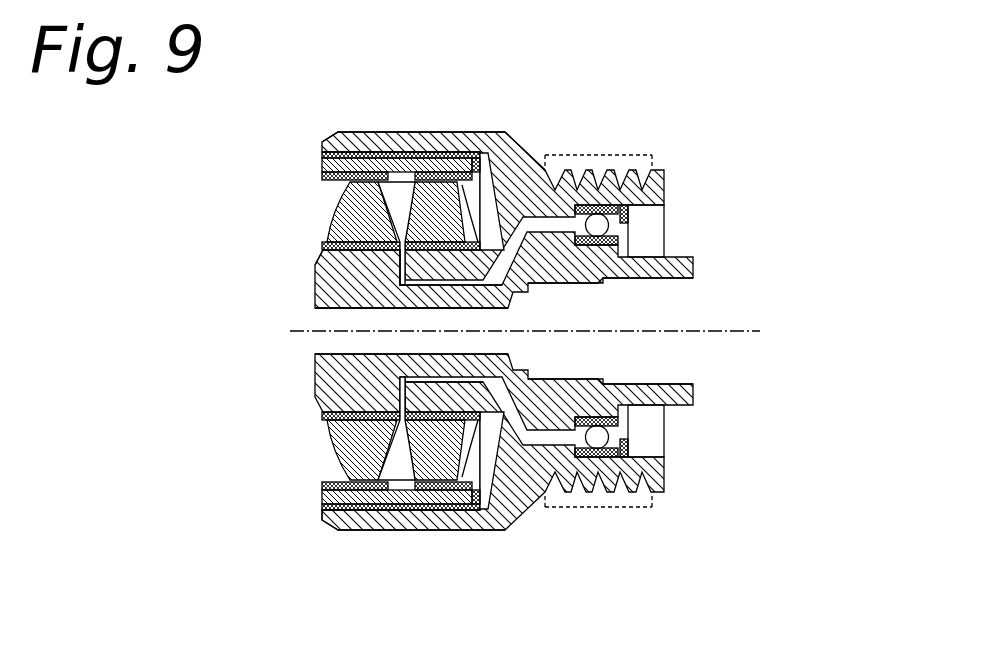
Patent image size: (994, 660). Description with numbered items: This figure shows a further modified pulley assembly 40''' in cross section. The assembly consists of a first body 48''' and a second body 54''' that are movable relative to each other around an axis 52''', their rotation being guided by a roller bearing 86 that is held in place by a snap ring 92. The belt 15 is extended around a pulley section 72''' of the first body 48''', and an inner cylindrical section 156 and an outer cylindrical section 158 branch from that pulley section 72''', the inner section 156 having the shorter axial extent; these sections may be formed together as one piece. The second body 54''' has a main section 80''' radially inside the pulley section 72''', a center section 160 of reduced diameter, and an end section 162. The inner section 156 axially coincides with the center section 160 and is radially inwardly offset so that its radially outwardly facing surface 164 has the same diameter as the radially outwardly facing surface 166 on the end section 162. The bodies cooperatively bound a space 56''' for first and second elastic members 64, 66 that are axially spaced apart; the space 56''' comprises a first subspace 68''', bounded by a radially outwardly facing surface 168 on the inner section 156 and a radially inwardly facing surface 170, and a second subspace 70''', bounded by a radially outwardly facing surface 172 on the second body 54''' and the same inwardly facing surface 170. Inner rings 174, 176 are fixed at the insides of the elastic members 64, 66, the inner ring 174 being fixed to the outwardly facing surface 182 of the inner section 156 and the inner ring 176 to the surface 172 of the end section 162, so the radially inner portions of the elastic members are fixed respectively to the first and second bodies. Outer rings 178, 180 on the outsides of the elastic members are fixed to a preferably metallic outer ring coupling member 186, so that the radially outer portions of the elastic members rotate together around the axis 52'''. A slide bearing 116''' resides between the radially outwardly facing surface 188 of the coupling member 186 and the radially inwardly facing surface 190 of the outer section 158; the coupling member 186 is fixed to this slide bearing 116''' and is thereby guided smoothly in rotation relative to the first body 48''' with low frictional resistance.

The pulley assembly 40''' is at (525, 356).
The first body 48''' is at (488, 177).
The belt 15 is at (652, 155).
The radially outwardly facing surface 164 is at (326, 136).
The first elastic member 64 is at (515, 150).
The outwardly facing surface 182 is at (496, 190).
The outer ring 180 is at (340, 180).
The radially outwardly facing surface 166 is at (345, 237).
The inner ring 176 is at (340, 262).
The second elastic member 66 is at (355, 208).
The outer ring 178 is at (440, 205).
The inner ring 174 is at (487, 225).
The outer ring coupling member 186 is at (397, 190).
The second body 54''' is at (560, 331).
The end section 162 is at (347, 283).
The center section 160 is at (445, 303).
The main section 80''' is at (652, 324).
The axis 52''' is at (559, 358).
The roller bearing 86 is at (597, 222).
The snap ring 92 is at (624, 200).
The slide bearing 116''' is at (467, 514).
The radially outwardly facing surface 168 is at (500, 522).
The radially inwardly facing surface 190 is at (327, 520).
The outer cylindrical section 158 is at (460, 508).
The second subspace 70''' is at (334, 474).
The radially outwardly facing surface 172 is at (330, 425).
The radially outwardly facing surface 188 is at (412, 425).
The inner cylindrical section 156 is at (410, 395).
The space 56''' is at (307, 443).
The first subspace 68''' is at (344, 459).
The radially inwardly facing surface 170 is at (393, 480).
The pulley section 72''' is at (648, 483).